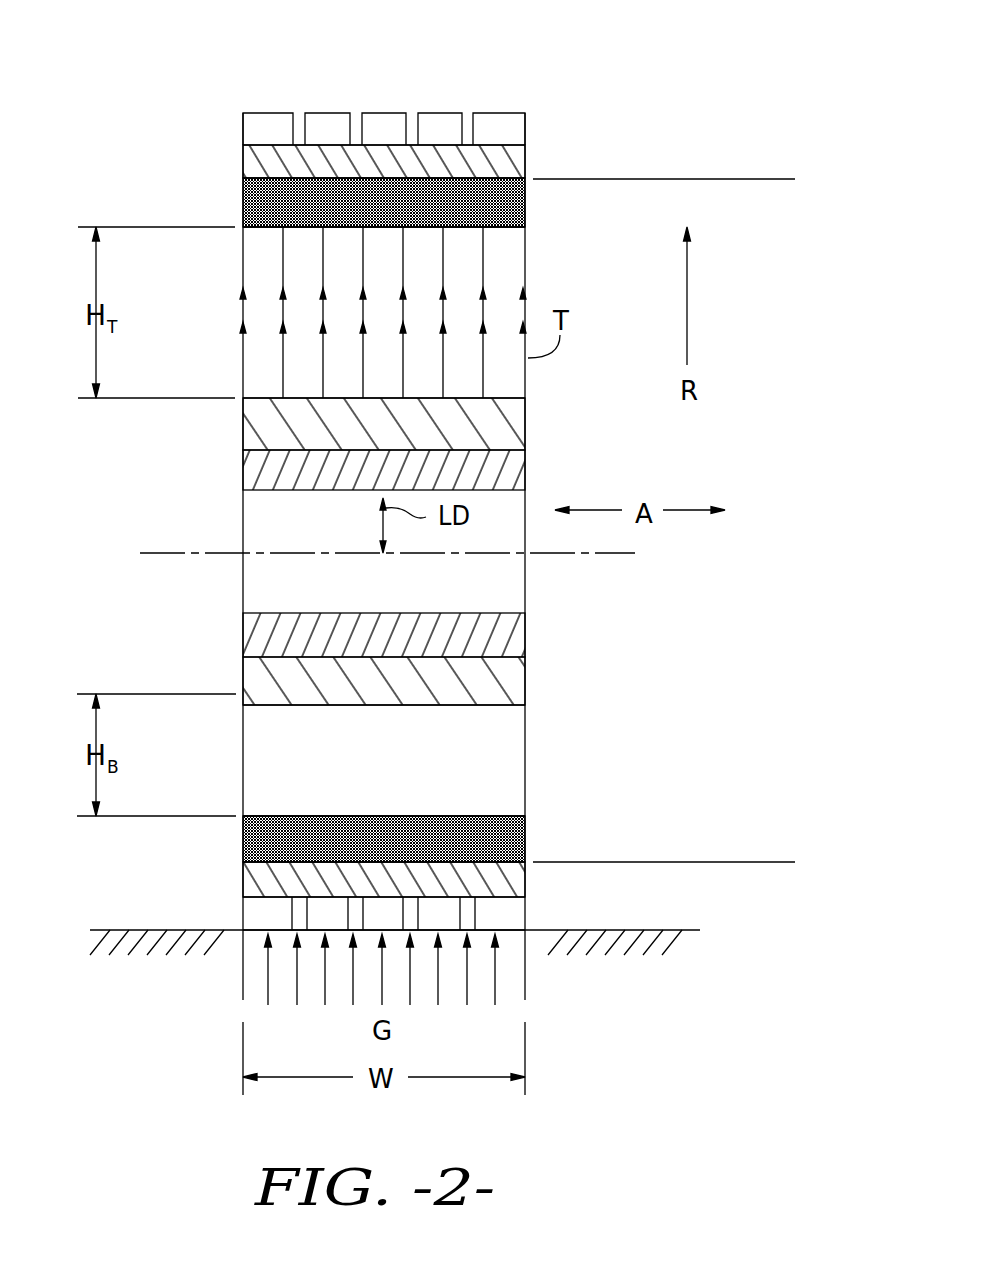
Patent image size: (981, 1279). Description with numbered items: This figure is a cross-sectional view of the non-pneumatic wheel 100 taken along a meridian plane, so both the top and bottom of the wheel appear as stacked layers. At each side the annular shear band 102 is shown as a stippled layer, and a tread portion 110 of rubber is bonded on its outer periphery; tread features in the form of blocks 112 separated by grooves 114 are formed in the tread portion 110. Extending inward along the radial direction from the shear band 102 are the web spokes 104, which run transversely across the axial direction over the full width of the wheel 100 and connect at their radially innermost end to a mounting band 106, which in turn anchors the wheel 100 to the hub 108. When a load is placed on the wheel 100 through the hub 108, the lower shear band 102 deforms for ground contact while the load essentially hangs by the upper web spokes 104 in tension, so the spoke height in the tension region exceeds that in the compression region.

The non-pneumatic wheel 100 is at (147, 92).
The shear band 102 is at (221, 178).
The web spokes 104 is at (216, 308).
The mounting band 106 is at (528, 420).
The hub 108 is at (528, 473).
The tread portion 110 is at (528, 161).
The blocks 112 is at (263, 112).
The grooves 114 is at (355, 114).